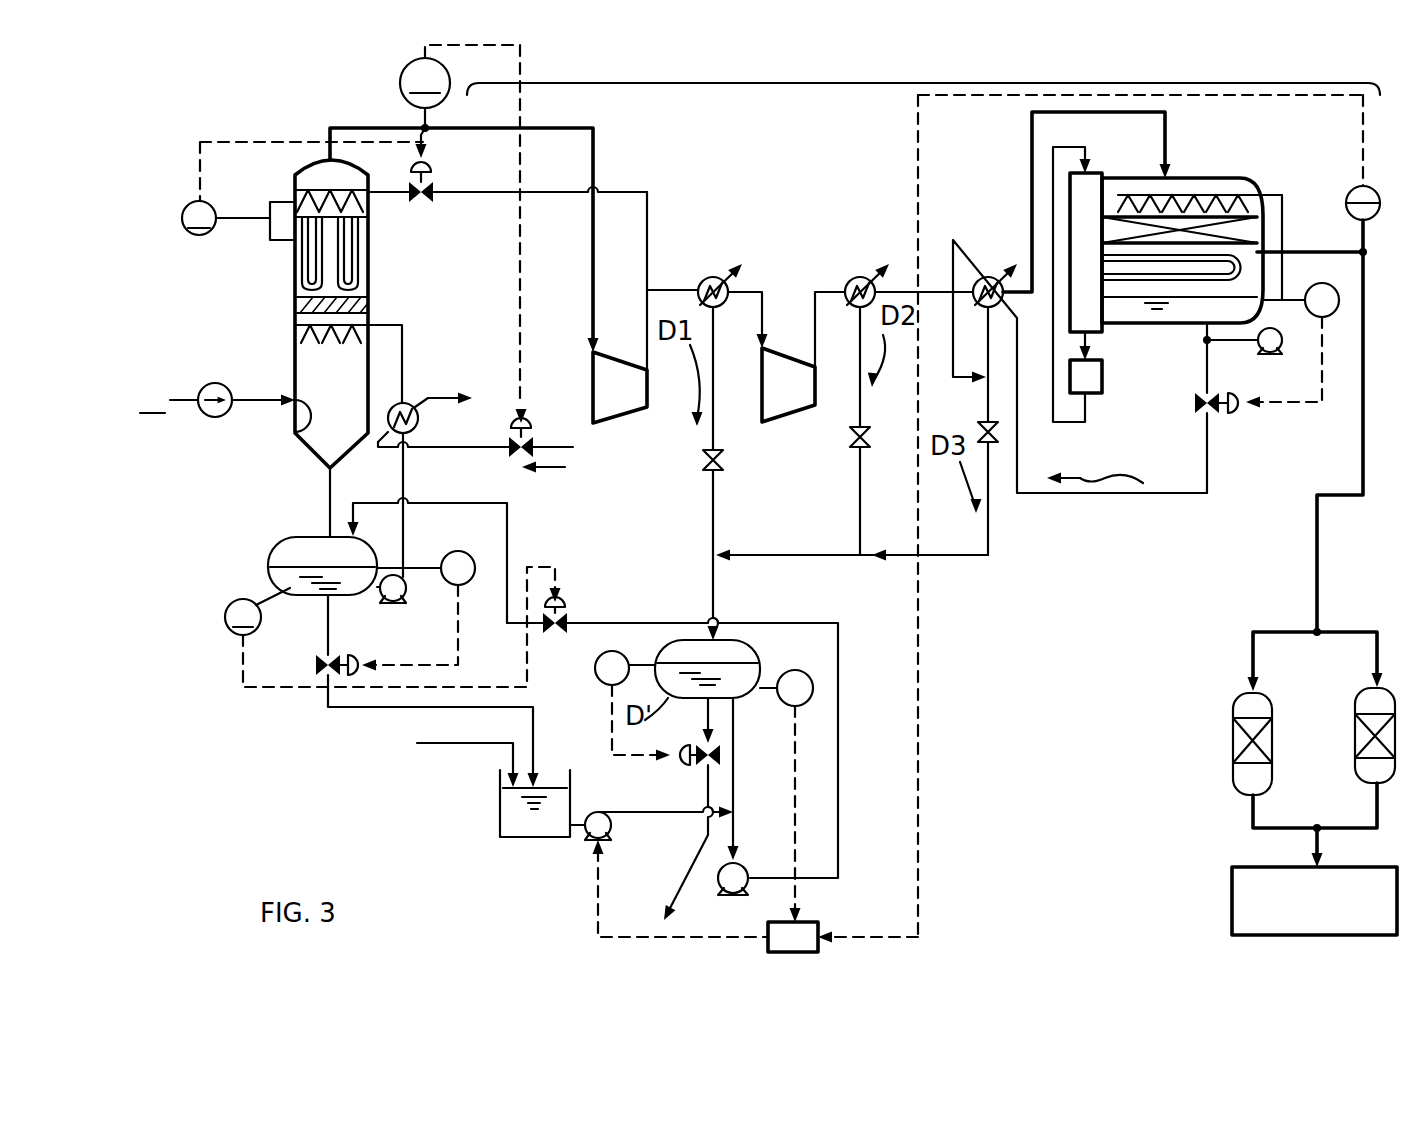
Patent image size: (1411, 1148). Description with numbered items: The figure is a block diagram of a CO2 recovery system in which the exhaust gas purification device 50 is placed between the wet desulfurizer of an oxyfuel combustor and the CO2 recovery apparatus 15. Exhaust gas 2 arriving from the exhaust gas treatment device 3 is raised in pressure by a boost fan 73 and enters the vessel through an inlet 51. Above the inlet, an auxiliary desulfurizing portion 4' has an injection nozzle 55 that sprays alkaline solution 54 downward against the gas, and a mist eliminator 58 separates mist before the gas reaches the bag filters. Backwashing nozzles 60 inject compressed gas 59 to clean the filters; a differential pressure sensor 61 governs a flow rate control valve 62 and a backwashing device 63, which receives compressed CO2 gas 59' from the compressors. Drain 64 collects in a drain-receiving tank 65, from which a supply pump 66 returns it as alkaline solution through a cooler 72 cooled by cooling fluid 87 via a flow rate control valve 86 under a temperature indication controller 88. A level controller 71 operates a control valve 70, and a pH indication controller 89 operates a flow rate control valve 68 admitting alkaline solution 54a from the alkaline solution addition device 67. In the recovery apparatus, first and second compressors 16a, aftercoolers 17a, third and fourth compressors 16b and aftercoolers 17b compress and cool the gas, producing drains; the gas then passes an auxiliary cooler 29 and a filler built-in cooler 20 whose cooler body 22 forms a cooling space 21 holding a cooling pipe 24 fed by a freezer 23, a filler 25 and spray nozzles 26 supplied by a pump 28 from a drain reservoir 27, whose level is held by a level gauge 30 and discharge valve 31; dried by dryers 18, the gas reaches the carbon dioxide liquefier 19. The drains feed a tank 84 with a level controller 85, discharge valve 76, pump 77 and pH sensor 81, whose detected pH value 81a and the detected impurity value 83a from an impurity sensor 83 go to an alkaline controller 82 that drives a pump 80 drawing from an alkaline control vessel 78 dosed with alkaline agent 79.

The exhaust gas 2 is at (333, 128).
The exhaust gas treatment device 3 is at (217, 397).
The auxiliary desulfurizing portion 4' is at (263, 326).
The CO2 recovery apparatus 15 is at (917, 83).
The first and second compressors 16a is at (612, 427).
The third and fourth compressors 16b is at (780, 425).
The aftercoolers 17a is at (705, 280).
The aftercoolers 17b is at (850, 280).
The dryers 18 is at (1355, 705).
The carbon dioxide liquefier 19 is at (1232, 890).
The filler built-in cooler 20 is at (1250, 165).
The cooling space 21 is at (1200, 175).
The cooler body 22 is at (1262, 182).
The freezer 23 is at (1096, 385).
The cooling pipe 24 is at (1133, 282).
The filler 25 is at (1112, 230).
The spray nozzles 26 is at (1130, 195).
The drain reservoir 27 is at (1160, 312).
The pump 28 is at (1268, 362).
The auxiliary cooler 29 is at (995, 280).
The level gauge 30 is at (1318, 318).
The discharge valve 31 is at (1240, 418).
The exhaust gas purification device 50 is at (288, 128).
The inlet 51 is at (342, 262).
The alkaline solution 54 is at (335, 345).
The alkaline solution 54a is at (633, 623).
The injection nozzle 55 is at (348, 326).
The mist eliminator 58 is at (310, 305).
The compressed gas 59 is at (363, 220).
The compressed CO2 gas 59' is at (677, 243).
The backwashing nozzles 60 is at (318, 192).
The differential pressure sensor 61 is at (199, 236).
The flow rate control valve 62 is at (433, 180).
The backwashing device 63 is at (447, 206).
The drain 64 is at (298, 590).
The drain-receiving tank 65 is at (270, 575).
The supply pump 66 is at (406, 590).
The alkaline solution addition device 67 is at (850, 692).
The flow rate control valve 68 is at (560, 600).
The control valve 70 is at (350, 655).
The level controller 71 is at (462, 552).
The cooler 72 is at (415, 403).
The boost fan 73 is at (207, 417).
The discharge valve 76 is at (688, 770).
The pump 77 is at (752, 870).
The alkaline control vessel 78 is at (500, 830).
The alkaline agent 79 is at (428, 748).
The pump 80 is at (611, 828).
The pH sensor 81 is at (803, 708).
The detected pH value 81a is at (794, 735).
The alkaline controller 82 is at (818, 915).
The impurity sensor 83 is at (1348, 215).
The detected impurity value 83a is at (918, 745).
The tank 84 is at (762, 648).
The level controller 85 is at (596, 682).
The flow rate control valve 86 is at (531, 418).
The cooling fluid 87 is at (552, 470).
The temperature indication controller 88 is at (400, 92).
The pH indication controller 89 is at (235, 632).